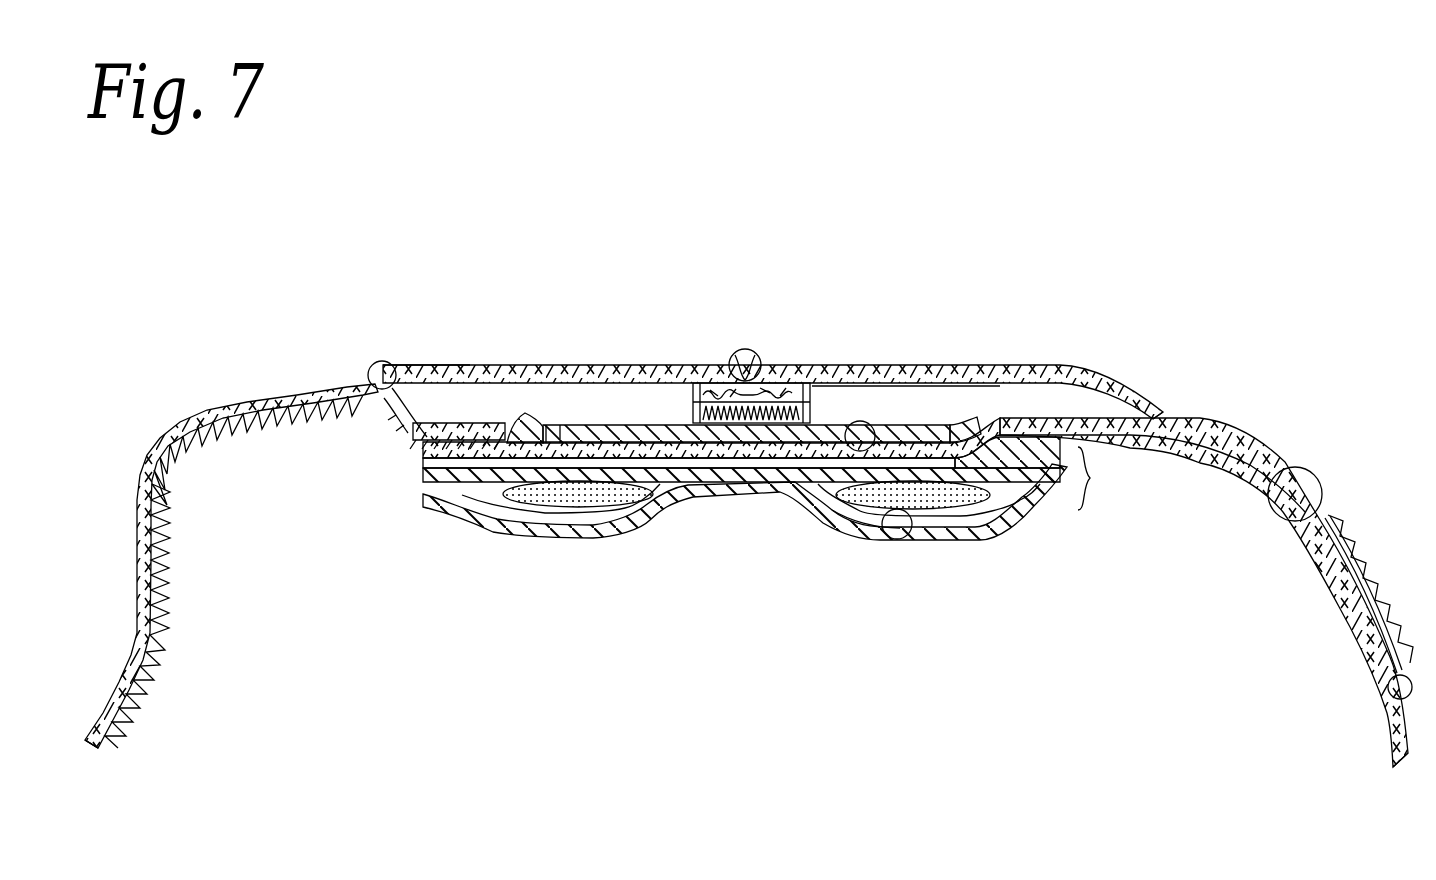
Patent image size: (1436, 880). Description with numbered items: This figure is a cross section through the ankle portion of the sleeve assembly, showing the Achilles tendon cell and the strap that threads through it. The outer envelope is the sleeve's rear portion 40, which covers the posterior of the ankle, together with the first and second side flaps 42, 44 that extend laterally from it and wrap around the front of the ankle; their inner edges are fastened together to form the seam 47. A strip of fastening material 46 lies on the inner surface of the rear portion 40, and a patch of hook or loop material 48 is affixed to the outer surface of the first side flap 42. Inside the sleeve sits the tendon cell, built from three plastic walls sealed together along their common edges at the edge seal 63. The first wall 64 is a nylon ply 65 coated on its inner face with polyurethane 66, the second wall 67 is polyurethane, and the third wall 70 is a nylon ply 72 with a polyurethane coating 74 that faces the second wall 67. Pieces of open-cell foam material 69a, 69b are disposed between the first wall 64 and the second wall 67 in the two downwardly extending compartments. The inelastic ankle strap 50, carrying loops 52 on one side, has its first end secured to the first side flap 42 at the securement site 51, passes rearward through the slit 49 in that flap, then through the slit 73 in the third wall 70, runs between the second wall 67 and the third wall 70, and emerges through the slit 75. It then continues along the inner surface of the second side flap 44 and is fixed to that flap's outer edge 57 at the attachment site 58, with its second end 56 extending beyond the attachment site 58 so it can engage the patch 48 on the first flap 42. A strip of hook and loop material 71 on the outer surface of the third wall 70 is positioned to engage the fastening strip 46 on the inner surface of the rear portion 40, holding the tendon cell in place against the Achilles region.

The rear portion 40 is at (1052, 366).
The first side flap 42 is at (1387, 733).
The second side flap 44 is at (445, 366).
The strip of fastening material 46 is at (815, 386).
The seam 47 is at (750, 352).
The patch of hook or loop material 48 is at (1368, 587).
The slit 49 is at (1166, 412).
The ankle strap 50 is at (1120, 420).
The securement site 51 is at (1307, 470).
The loops 52 is at (130, 725).
The second end of strap 56 is at (87, 742).
The outer edge of second side flap 57 is at (415, 366).
The attachment site 58 is at (388, 362).
The edge seal 63 is at (778, 464).
The first wall 64 is at (895, 542).
The nylon ply 65 is at (848, 532).
The polyurethane coating 66 is at (807, 513).
The second wall 67 is at (660, 478).
The open-cell foam material 69a is at (950, 500).
The open-cell foam material 69b is at (545, 478).
The third wall 70 is at (867, 422).
The strip of hook and loop material 71 is at (712, 400).
The nylon ply 72 is at (620, 432).
The slit 73 is at (960, 418).
The polyurethane coating 74 is at (555, 426).
The slit 75 is at (520, 418).